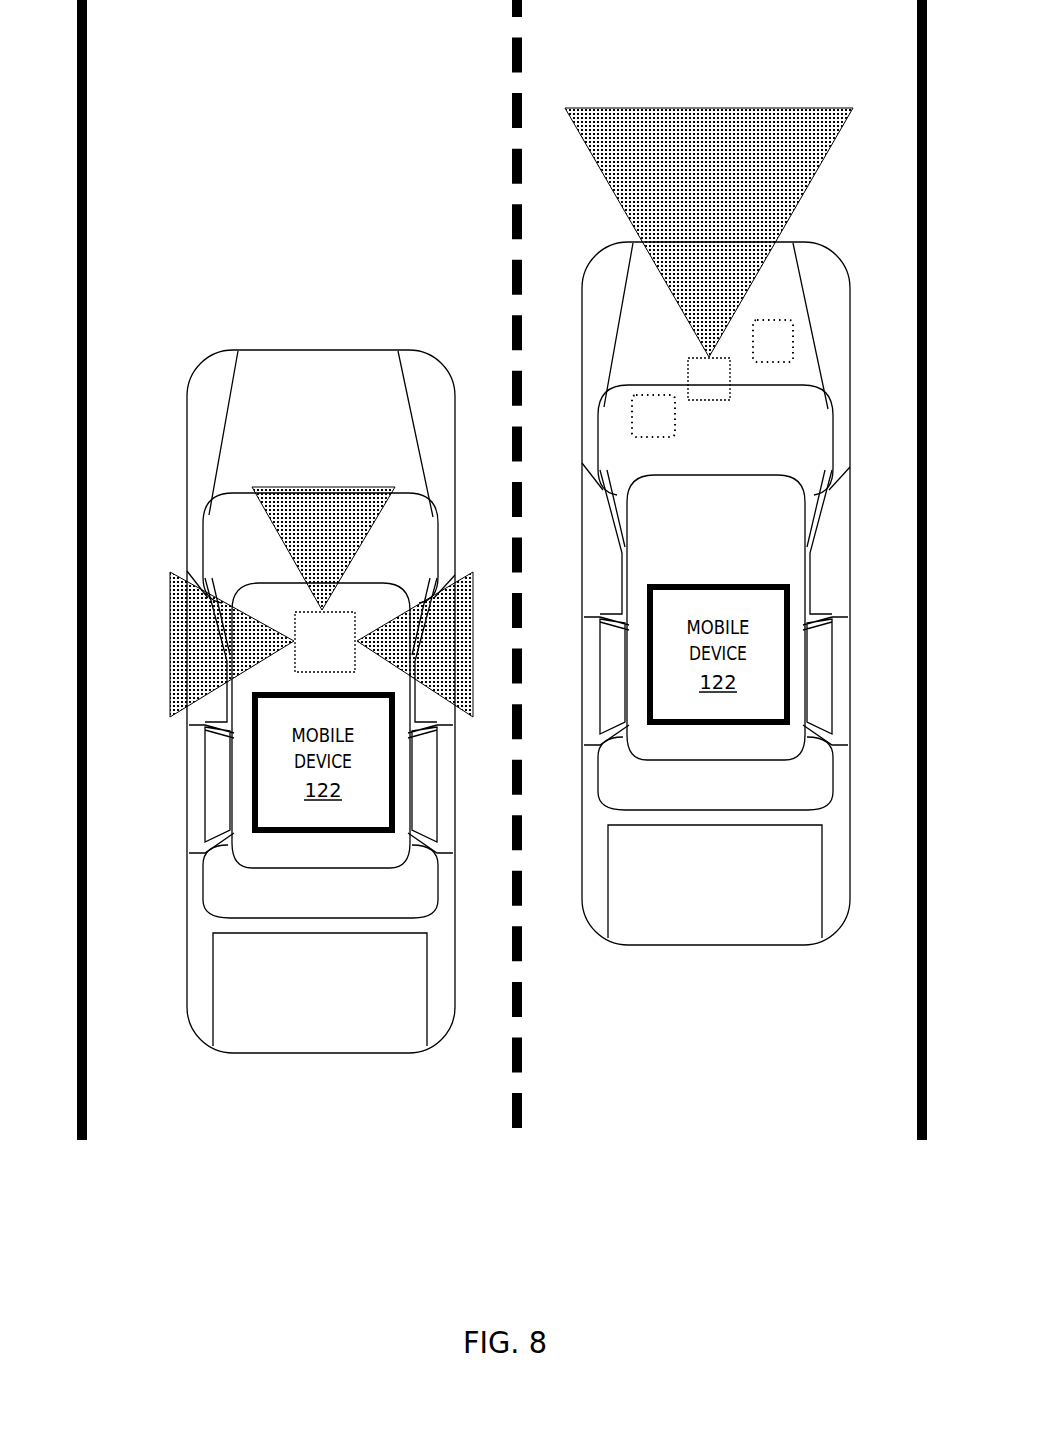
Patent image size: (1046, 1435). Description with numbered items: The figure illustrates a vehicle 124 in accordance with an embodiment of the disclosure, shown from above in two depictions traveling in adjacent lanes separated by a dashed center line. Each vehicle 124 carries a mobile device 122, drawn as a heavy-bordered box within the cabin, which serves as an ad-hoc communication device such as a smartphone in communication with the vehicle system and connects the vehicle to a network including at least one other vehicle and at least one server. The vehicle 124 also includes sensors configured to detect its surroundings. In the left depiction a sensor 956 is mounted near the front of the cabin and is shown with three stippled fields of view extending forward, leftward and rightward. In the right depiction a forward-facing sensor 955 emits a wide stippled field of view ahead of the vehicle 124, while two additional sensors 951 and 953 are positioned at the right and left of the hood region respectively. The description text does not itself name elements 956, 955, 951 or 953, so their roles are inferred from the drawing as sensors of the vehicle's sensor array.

The vehicle 124 is at (307, 1053).
The mobile device 122 is at (521, 708).
The sensor with multiple fields of view 956 is at (303, 653).
The forward-facing sensor 955 is at (708, 380).
The sensor 951 is at (773, 342).
The sensor 953 is at (655, 417).